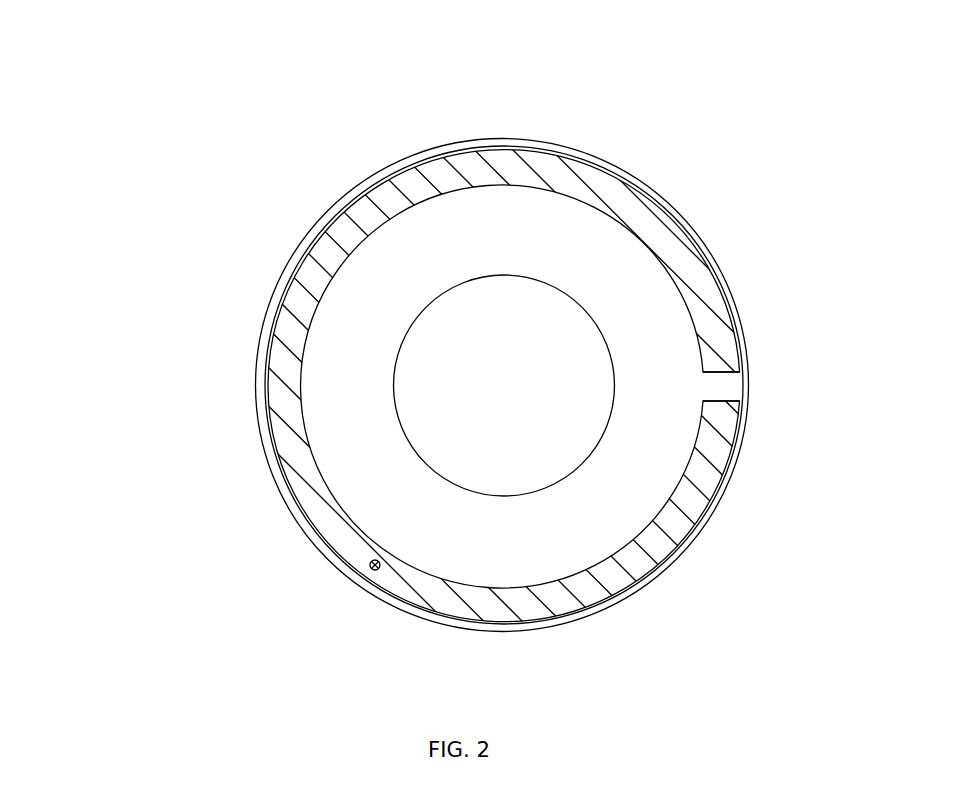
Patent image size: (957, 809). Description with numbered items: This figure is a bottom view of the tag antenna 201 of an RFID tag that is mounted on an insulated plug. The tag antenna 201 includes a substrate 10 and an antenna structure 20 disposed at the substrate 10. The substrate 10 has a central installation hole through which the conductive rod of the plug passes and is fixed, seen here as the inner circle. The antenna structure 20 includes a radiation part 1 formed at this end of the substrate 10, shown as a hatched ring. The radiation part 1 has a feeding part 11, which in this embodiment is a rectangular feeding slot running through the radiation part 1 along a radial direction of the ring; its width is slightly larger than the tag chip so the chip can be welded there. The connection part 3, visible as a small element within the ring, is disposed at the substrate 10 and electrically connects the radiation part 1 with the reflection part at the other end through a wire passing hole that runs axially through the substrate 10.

The tag antenna 201 is at (112, 80).
The antenna structure 20 is at (663, 561).
The radiation part 1 is at (708, 260).
The feeding part 11 is at (740, 378).
The substrate 10 is at (360, 346).
The connection part 3 is at (358, 580).